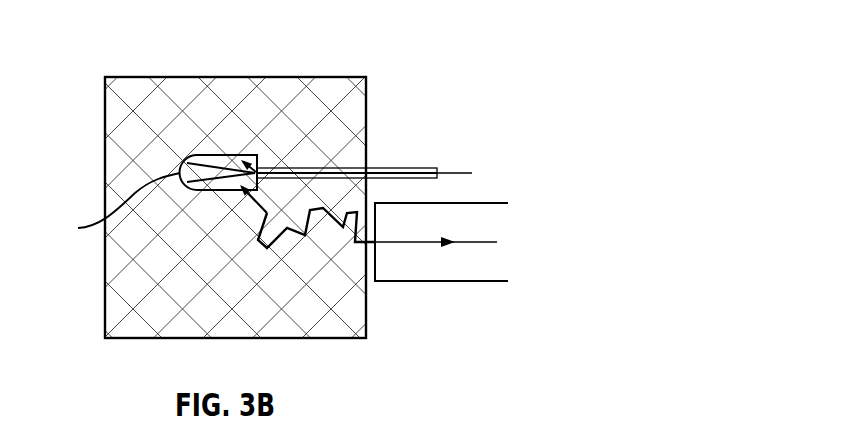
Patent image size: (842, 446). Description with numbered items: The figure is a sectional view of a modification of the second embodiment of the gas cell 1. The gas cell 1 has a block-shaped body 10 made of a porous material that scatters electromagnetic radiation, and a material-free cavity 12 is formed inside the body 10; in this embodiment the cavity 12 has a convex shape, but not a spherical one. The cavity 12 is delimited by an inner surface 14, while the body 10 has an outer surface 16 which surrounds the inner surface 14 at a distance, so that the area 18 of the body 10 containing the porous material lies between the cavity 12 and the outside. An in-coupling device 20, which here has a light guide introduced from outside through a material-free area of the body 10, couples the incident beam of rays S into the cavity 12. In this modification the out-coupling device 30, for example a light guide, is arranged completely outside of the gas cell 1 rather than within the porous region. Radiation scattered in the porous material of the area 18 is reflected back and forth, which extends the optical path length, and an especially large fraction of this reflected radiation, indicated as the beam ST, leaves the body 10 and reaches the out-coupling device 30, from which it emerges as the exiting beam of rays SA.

The gas cell 1 is at (97, 50).
The body 10 is at (295, 92).
The cavity 12 is at (222, 163).
The inner surface 14 is at (114, 209).
The outer surface 16 is at (104, 134).
The area containing the porous material 18 is at (122, 313).
The in-coupling device 20 is at (397, 168).
The out-coupling device 30 is at (480, 281).
The incident beam of rays S is at (450, 172).
The exiting beam of rays SA is at (487, 242).
The beam ST is at (263, 249).